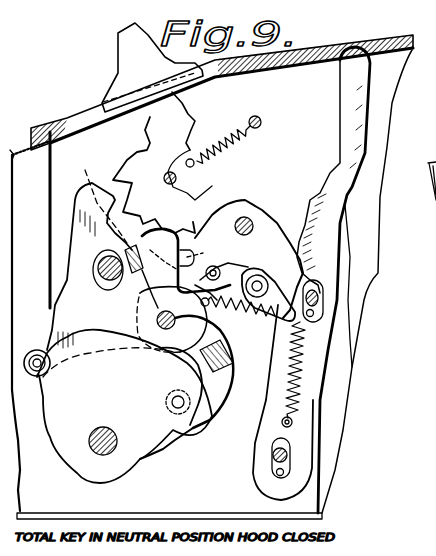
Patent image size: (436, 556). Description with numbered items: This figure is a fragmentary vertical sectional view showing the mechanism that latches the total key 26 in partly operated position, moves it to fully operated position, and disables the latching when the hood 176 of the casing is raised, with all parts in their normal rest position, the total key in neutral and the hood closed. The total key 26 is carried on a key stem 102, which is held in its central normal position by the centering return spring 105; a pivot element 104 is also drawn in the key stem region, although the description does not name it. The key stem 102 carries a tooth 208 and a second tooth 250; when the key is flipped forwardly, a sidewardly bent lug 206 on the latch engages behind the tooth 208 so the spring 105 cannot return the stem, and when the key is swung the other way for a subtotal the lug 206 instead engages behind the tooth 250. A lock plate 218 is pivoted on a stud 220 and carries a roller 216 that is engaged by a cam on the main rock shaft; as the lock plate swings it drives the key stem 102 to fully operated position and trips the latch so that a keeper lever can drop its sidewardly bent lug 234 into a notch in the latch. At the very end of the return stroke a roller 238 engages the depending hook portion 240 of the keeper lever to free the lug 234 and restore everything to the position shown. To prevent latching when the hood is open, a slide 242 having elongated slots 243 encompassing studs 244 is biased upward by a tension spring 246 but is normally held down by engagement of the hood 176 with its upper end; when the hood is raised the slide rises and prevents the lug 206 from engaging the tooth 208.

The total key 26 is at (128, 62).
The key stem 102 is at (186, 120).
The pivot pin 104 is at (166, 175).
The return spring 105 is at (248, 118).
The hood 176 is at (304, 66).
The sidewardly bent lug 206 is at (236, 202).
The tooth 208 is at (216, 168).
The roller 216 is at (37, 352).
The lock plate 218 is at (80, 260).
The stud 220 is at (209, 312).
The sidewardly bent lug 234 is at (93, 198).
The roller 238 is at (175, 448).
The depending hook portion 240 is at (238, 385).
The slide 242 is at (338, 167).
The elongated slots 243 is at (312, 290).
The studs 244 is at (320, 302).
The tension spring 246 is at (282, 378).
The tooth 250 is at (202, 186).